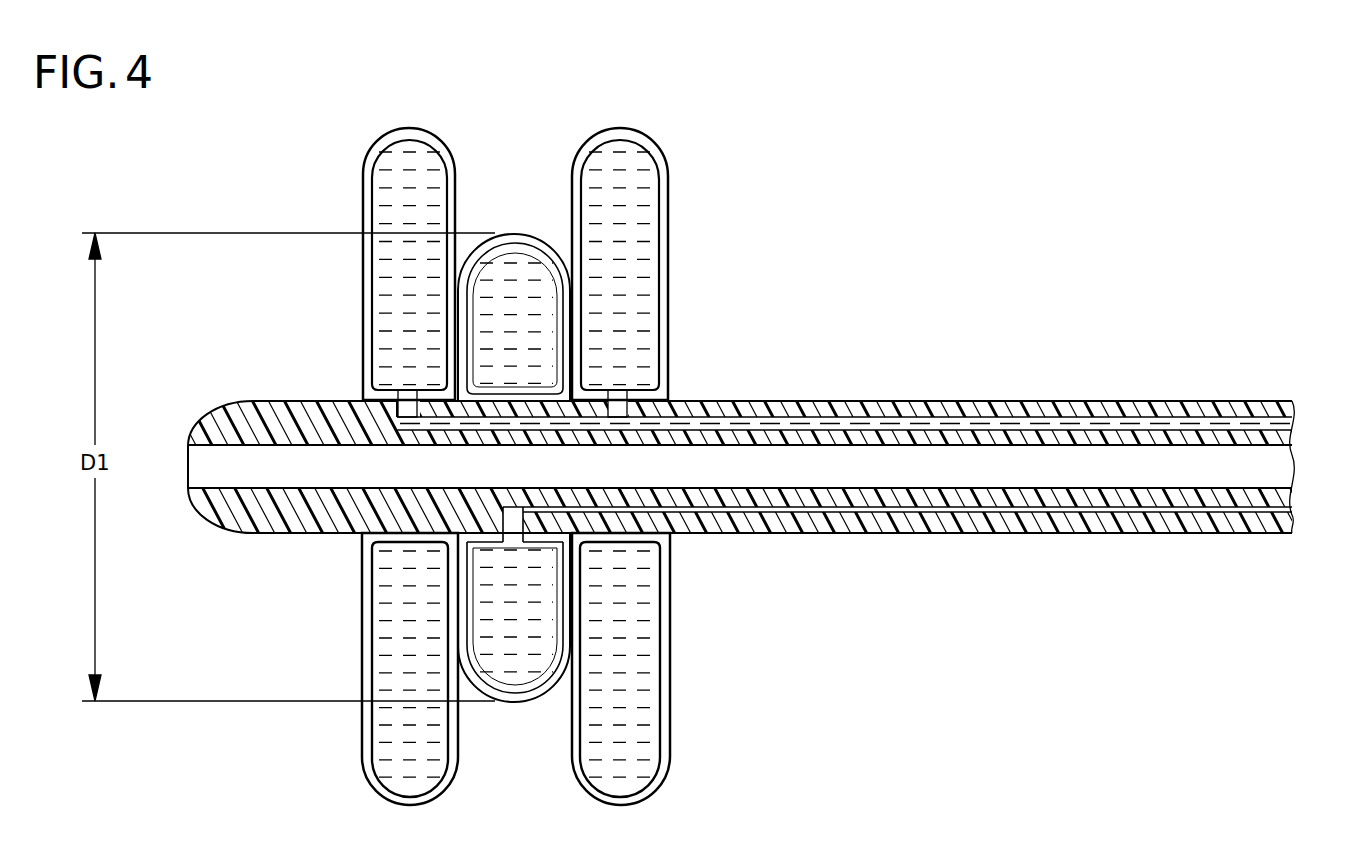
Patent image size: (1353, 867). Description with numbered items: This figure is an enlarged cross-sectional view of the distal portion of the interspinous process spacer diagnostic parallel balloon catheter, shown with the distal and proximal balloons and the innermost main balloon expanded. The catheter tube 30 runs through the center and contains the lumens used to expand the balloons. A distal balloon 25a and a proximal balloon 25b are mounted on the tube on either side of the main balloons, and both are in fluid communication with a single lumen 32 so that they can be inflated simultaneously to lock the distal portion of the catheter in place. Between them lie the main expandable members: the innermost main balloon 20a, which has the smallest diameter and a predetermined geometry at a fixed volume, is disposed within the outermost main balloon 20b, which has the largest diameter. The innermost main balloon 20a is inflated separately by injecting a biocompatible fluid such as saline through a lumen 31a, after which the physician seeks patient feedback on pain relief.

The innermost main balloon 20a is at (537, 252).
The outermost main balloon 20b is at (504, 232).
The distal balloon 25a is at (363, 180).
The proximal balloon 25b is at (668, 206).
The catheter tube 30 is at (1057, 531).
The lumen 31a is at (835, 514).
The lumen 32 is at (1002, 420).